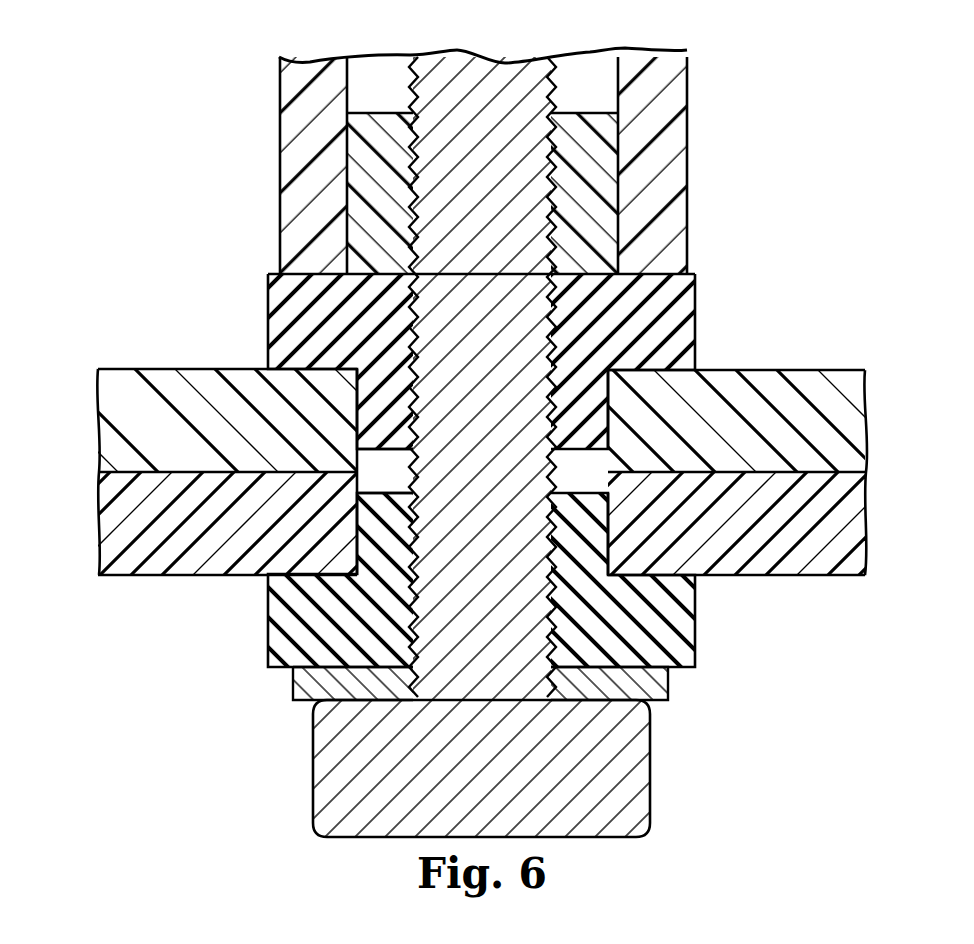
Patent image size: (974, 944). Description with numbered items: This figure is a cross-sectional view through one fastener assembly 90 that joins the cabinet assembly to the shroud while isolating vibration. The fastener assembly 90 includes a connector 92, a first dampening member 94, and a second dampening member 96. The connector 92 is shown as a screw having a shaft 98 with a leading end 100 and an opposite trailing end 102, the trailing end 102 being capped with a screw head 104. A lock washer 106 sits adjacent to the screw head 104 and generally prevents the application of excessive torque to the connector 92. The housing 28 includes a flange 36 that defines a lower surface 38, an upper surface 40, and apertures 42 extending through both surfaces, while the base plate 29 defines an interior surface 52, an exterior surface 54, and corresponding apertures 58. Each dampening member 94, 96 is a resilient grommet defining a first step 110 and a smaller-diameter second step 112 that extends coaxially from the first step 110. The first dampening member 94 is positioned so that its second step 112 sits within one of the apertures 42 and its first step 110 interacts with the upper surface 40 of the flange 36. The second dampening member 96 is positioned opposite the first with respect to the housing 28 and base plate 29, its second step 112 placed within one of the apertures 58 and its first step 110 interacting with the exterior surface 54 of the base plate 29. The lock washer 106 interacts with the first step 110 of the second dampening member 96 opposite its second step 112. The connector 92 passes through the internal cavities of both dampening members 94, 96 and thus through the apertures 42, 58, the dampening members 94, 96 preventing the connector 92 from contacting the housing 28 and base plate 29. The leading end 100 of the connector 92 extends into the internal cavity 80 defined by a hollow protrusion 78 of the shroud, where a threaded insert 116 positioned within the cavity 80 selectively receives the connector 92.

The housing 28 is at (856, 433).
The base plate 29 is at (825, 524).
The flange 36 is at (830, 404).
The lower surface 38 is at (127, 475).
The upper surface 40 is at (120, 368).
The apertures 42 is at (363, 462).
The interior surface 52 is at (160, 464).
The exterior surface 54 is at (118, 577).
The apertures 58 is at (590, 527).
The protrusions 78 is at (668, 100).
The internal cavity 80 is at (577, 88).
The fastener assembly 90 is at (804, 241).
The connector 92 is at (630, 787).
The first dampening member 94 is at (262, 290).
The second dampening member 96 is at (262, 624).
The shaft 98 is at (457, 92).
The leading end 100 is at (502, 100).
The trailing end 102 is at (428, 642).
The screw head 104 is at (330, 760).
The lock washer 106 is at (648, 685).
The first step 110 is at (670, 307).
The second step 112 is at (586, 413).
The threaded insert 116 is at (600, 180).